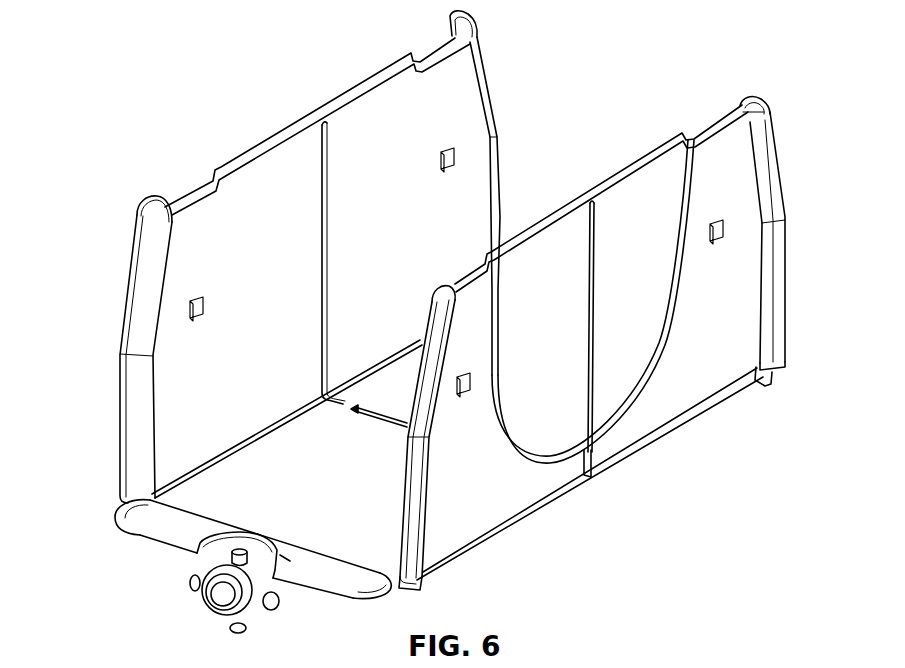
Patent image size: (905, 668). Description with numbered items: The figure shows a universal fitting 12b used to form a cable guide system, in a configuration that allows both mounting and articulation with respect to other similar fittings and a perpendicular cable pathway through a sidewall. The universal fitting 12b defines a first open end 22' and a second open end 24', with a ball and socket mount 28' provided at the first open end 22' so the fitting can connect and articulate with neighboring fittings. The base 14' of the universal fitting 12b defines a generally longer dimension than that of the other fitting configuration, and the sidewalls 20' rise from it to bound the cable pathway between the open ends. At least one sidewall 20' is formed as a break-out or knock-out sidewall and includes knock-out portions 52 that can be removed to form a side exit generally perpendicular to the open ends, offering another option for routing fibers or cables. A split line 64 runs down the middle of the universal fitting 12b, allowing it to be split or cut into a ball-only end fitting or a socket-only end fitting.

The universal fitting 12b is at (426, 334).
The second open end 24' is at (592, 328).
The knock-out portions 52 is at (664, 293).
The base 14' is at (599, 473).
The sidewall 20' is at (373, 456).
The first open end 22' is at (229, 546).
The split line 64 is at (356, 404).
The ball and socket mount 28' is at (254, 603).